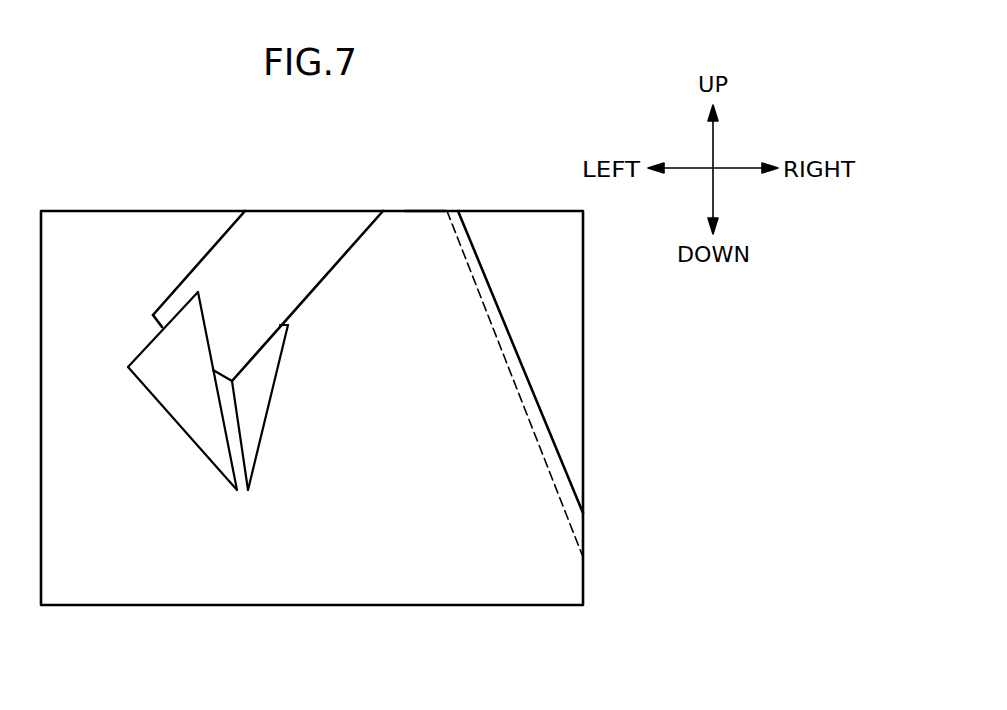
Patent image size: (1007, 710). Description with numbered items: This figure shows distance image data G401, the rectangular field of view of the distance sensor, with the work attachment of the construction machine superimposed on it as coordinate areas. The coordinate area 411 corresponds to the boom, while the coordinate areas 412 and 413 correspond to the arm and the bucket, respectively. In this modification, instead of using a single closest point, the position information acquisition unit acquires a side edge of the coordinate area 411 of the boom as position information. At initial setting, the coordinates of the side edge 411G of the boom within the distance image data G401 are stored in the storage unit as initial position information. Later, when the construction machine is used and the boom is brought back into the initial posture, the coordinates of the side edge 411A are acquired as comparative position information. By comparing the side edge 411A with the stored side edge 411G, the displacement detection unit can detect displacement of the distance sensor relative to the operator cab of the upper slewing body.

The coordinate area 411 is at (565, 310).
The coordinate area 412 is at (282, 233).
The coordinate area 413 is at (258, 388).
The distance image data G401 is at (420, 210).
The side edge 411A is at (548, 428).
The side edge 411G is at (557, 487).